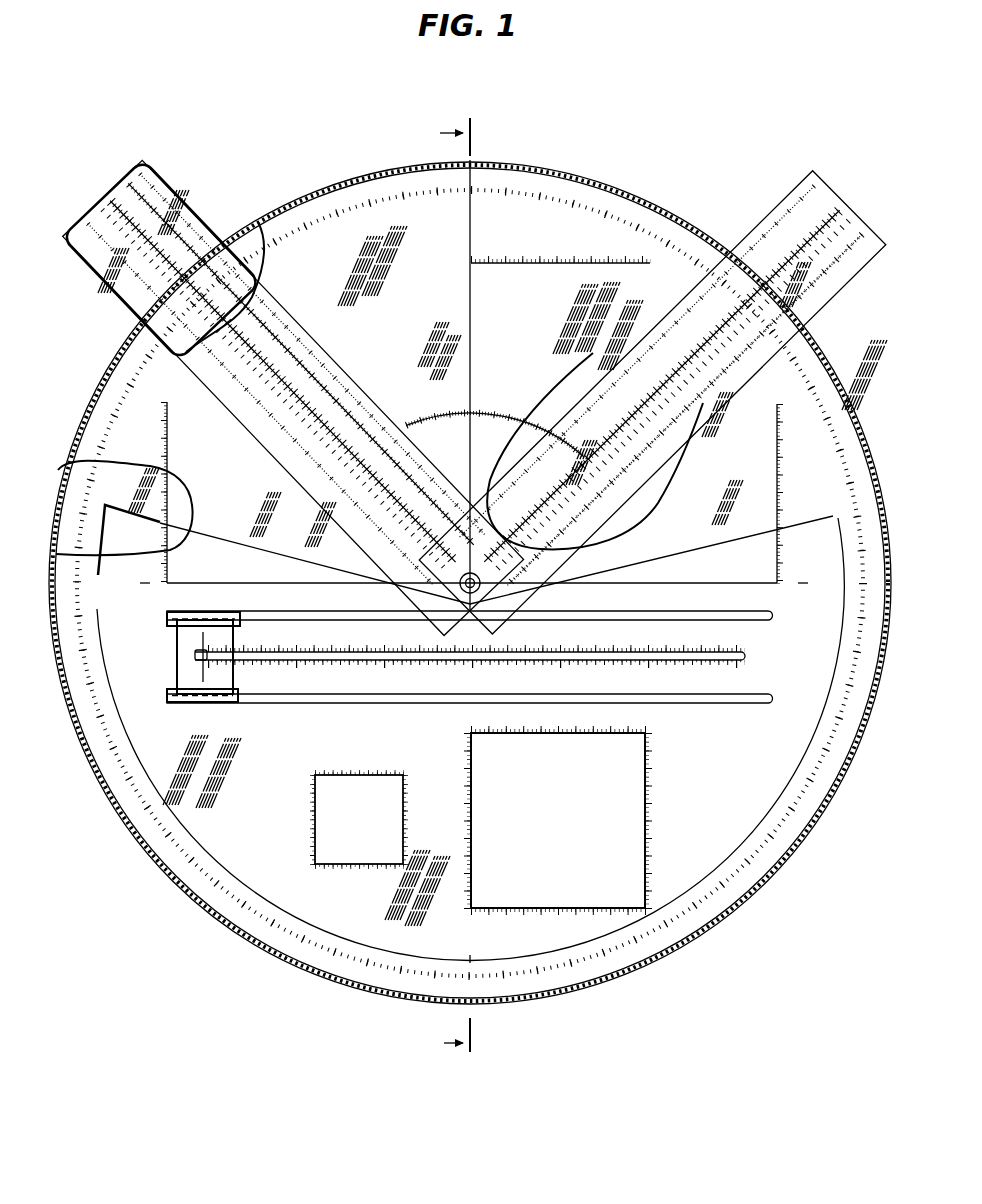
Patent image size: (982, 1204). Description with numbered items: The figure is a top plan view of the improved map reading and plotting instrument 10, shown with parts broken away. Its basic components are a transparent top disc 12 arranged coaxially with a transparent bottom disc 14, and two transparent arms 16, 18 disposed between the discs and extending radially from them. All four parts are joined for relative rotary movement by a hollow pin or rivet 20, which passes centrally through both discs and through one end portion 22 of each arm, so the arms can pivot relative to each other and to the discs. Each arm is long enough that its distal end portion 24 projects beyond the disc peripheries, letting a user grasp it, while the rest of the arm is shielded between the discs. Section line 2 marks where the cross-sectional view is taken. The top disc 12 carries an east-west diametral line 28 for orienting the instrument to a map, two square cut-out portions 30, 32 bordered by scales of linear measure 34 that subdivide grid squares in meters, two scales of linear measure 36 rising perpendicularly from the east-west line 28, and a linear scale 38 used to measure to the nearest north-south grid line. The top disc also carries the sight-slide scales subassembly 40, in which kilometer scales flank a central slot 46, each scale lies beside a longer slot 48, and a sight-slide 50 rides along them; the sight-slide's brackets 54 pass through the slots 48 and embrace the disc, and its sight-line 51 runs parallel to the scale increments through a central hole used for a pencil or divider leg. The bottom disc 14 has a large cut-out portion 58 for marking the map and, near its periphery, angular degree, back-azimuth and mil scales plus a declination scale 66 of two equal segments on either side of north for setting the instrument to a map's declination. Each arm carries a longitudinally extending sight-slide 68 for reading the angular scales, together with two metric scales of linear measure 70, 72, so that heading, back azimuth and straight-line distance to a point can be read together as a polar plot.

The section line 2- 2 is at (652, 586).
The map reading and plotting instrument 10 is at (470, 582).
The top disc 12 is at (470, 569).
The bottom disc 14 is at (470, 579).
The arm 16 is at (653, 394).
The arm 18 is at (293, 398).
The hollow pin or rivet 20 is at (433, 570).
The end portion 22 is at (496, 565).
The distal end portion 24 is at (161, 260).
The east-west diametral line 28 is at (470, 739).
The cut-out portion 30 is at (592, 821).
The cut-out portion 32 is at (321, 839).
The scales of linear measure 34 is at (482, 844).
The scales of linear measure 36 is at (472, 491).
The linear scale 38 is at (561, 271).
The sight-slide scales subassembly 40 is at (484, 672).
The slot 46 is at (470, 634).
The slot 48 is at (488, 666).
The sight-slide 50 is at (193, 678).
The sight-line 51 is at (176, 658).
The brackets 54 is at (193, 623).
The cut-out portion 58 is at (136, 518).
The declination scale 66 is at (595, 451).
The sight-slide 68 is at (291, 373).
The scale of linear measure 70 is at (229, 334).
The scale of linear measure 72 is at (285, 378).